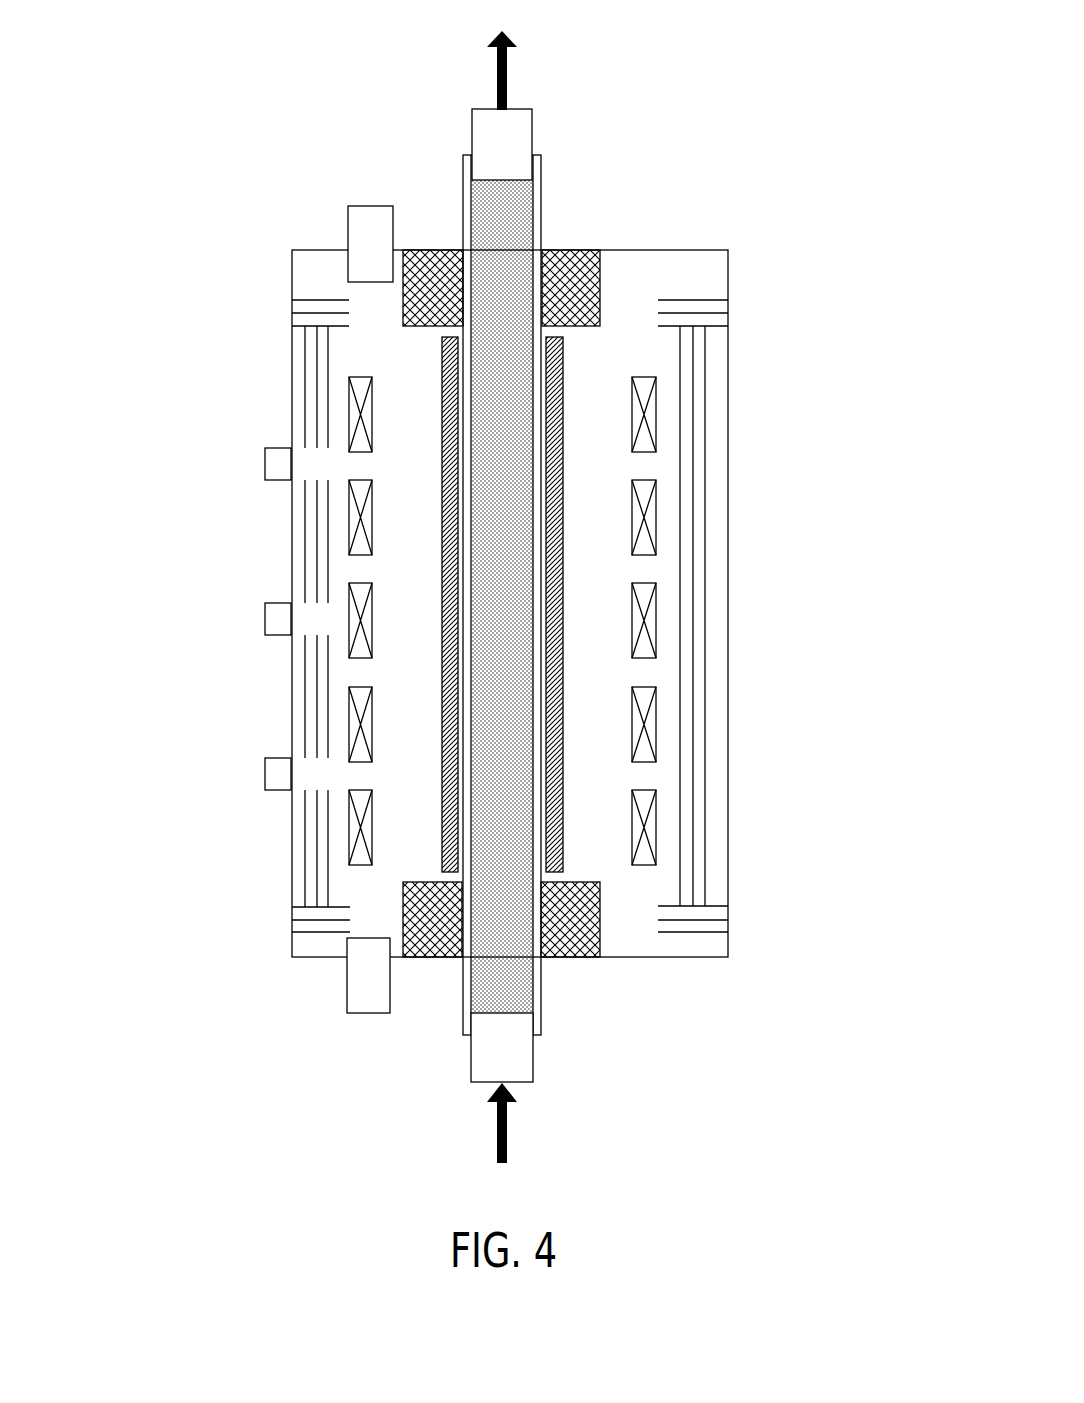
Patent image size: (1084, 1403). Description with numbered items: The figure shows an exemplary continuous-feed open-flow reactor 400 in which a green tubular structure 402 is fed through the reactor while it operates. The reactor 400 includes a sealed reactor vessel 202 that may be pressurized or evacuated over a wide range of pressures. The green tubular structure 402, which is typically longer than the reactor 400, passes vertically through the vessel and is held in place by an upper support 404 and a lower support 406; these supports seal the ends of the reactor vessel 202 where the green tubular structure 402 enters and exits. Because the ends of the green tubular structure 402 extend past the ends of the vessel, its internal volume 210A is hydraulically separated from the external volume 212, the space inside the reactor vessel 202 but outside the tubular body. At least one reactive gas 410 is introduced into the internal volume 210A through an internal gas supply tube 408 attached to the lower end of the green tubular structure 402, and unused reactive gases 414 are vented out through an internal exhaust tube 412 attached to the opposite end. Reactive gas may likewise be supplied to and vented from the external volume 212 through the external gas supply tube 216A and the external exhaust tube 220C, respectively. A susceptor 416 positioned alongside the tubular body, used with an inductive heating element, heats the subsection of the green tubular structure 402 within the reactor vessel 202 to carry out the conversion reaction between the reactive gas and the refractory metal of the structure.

The continuous-feed open-flow reactor 400 is at (501, 596).
The sealed reactor vessel 202 is at (325, 248).
The external exhaust tube 220C is at (372, 218).
The external gas supply tube 216A is at (367, 1005).
The upper support 404 is at (566, 273).
The lower support 406 is at (570, 922).
The external volume 212 is at (403, 485).
The susceptor 416 is at (560, 550).
The green tubular structure 402 is at (399, 595).
The internal volume 210A is at (485, 632).
The internal exhaust tube 412 is at (480, 132).
The internal gas supply tube 408 is at (520, 1050).
The unused reactive gases 414 is at (509, 78).
The reactive gas 410 is at (507, 1133).